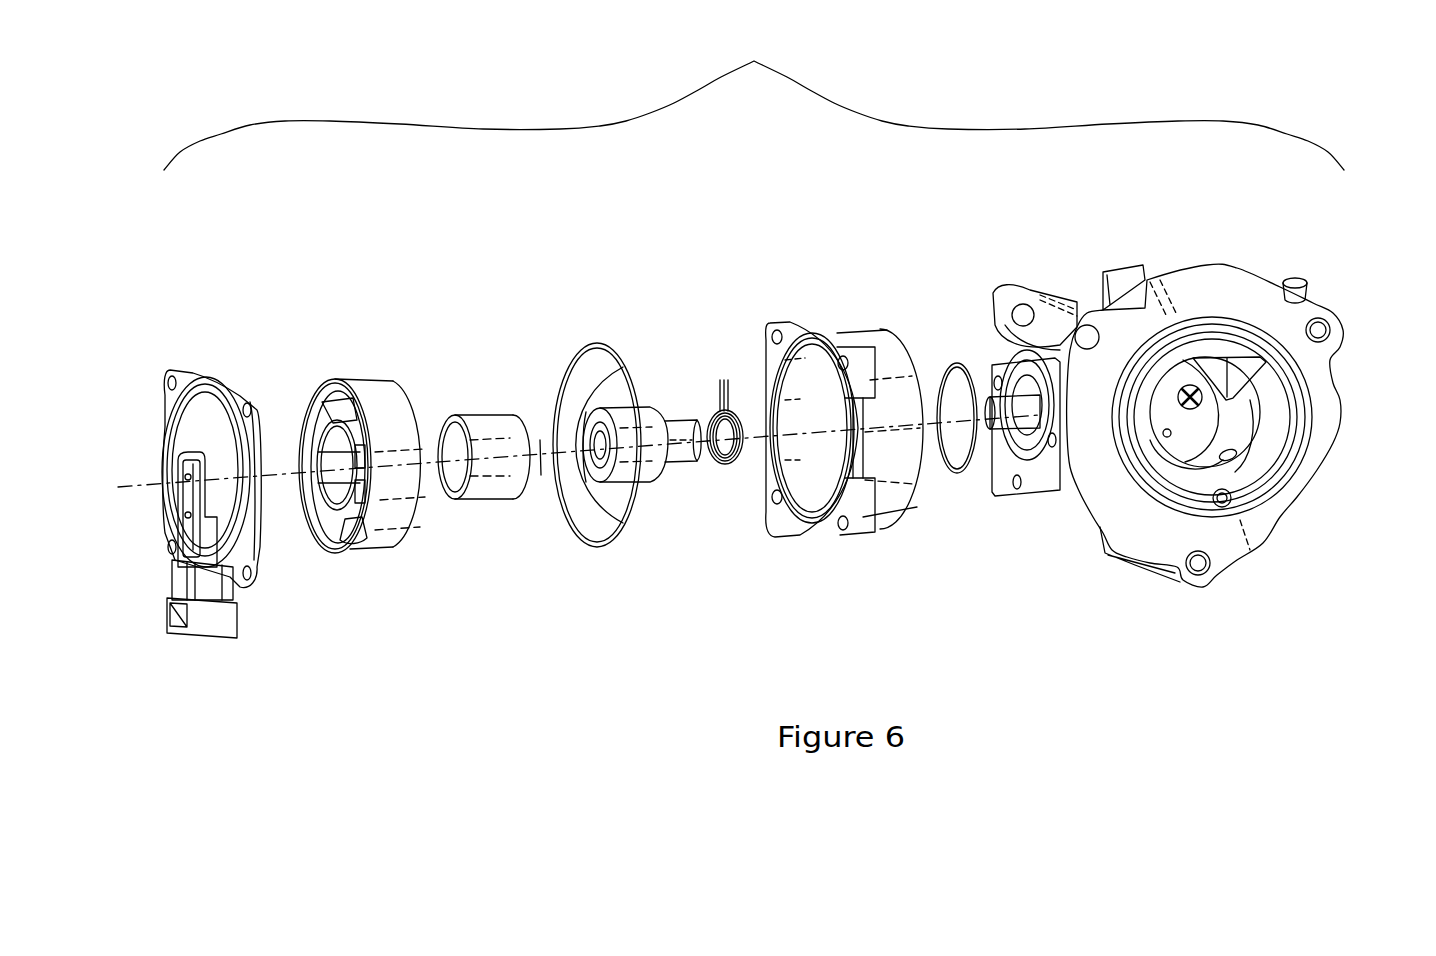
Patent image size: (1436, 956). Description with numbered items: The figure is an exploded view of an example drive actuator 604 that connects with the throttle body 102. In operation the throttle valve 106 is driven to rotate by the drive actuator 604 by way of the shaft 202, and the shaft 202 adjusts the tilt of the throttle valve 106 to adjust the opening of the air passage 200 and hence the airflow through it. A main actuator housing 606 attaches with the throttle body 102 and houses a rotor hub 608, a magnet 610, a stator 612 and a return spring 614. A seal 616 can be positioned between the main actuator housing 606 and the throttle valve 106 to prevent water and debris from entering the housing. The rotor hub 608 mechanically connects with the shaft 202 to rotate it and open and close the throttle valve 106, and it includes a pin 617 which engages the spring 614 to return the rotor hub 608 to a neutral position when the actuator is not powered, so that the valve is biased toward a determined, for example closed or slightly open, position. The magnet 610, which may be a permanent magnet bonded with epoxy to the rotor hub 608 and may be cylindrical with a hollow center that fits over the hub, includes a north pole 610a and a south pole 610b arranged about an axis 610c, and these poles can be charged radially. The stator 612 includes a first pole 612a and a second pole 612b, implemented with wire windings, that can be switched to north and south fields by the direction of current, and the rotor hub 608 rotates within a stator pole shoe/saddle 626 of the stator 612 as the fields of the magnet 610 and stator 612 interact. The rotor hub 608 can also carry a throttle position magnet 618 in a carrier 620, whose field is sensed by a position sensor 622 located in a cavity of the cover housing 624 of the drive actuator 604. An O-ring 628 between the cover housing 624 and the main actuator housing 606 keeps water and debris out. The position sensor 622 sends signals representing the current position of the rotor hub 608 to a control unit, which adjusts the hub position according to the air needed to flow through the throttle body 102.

The throttle body 102 is at (1207, 397).
The throttle valve 106 is at (1243, 370).
The air passage 200 is at (1173, 420).
The shaft 202 is at (1018, 438).
The drive actuator 604 is at (754, 100).
The main actuator housing 606 is at (867, 338).
The rotor hub 608 is at (672, 467).
The magnet 610 is at (504, 470).
The north pole 610a is at (499, 418).
The south pole 610b is at (484, 500).
The axis 610c is at (533, 460).
The stator 612 is at (342, 456).
The first pole 612a is at (347, 535).
The second pole 612b is at (333, 392).
The return spring 614 is at (722, 468).
The seal 616 is at (957, 362).
The pin 617 is at (668, 416).
The throttle position magnet 618 is at (625, 526).
The carrier 620 is at (602, 438).
The position sensor 622 is at (193, 492).
The cover housing 624 is at (179, 474).
The stator pole shoe/saddle 626 is at (315, 435).
The O-ring 628 is at (594, 348).